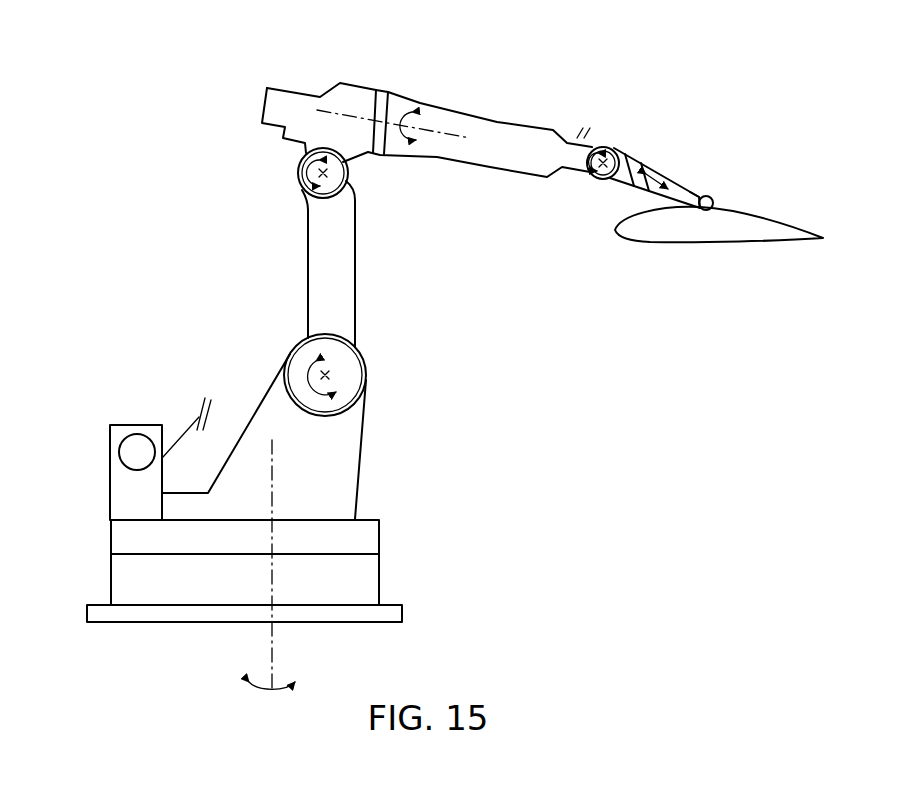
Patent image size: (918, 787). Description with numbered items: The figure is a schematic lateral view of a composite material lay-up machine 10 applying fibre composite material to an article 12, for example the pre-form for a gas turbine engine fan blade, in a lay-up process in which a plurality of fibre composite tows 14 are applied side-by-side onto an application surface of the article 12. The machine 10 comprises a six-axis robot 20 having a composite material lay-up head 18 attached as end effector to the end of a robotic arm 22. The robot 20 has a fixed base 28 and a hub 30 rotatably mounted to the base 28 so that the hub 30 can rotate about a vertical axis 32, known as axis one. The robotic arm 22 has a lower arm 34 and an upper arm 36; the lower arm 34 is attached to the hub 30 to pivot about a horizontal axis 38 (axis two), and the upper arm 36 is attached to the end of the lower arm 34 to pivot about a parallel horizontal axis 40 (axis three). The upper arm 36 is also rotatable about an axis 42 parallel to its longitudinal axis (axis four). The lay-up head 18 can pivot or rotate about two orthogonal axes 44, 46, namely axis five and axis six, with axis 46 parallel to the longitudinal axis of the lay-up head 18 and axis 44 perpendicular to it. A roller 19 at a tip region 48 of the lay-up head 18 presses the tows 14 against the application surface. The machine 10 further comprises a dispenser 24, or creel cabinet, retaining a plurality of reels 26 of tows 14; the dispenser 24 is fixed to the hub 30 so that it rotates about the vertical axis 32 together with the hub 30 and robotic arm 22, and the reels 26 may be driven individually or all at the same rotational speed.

The composite material lay-up machine 10 is at (176, 80).
The article 12 is at (714, 230).
The tows 14 is at (598, 133).
The lay-up head 18 is at (696, 188).
The roller 19 is at (711, 200).
The six-axis robot 20 is at (400, 66).
The robotic arm 22 is at (360, 268).
The dispenser 24 is at (122, 500).
The reels 26 is at (130, 452).
The fixed base 28 is at (367, 585).
The hub 30 is at (356, 518).
The vertical axis 32 is at (272, 643).
The lower arm 34 is at (345, 313).
The upper arm 36 is at (497, 122).
The horizontal axis 38 is at (331, 375).
The horizontal axis 40 is at (330, 178).
The axis 42 is at (440, 130).
The axis 44 is at (592, 178).
The axis 46 is at (661, 180).
The tip region 48 is at (638, 162).